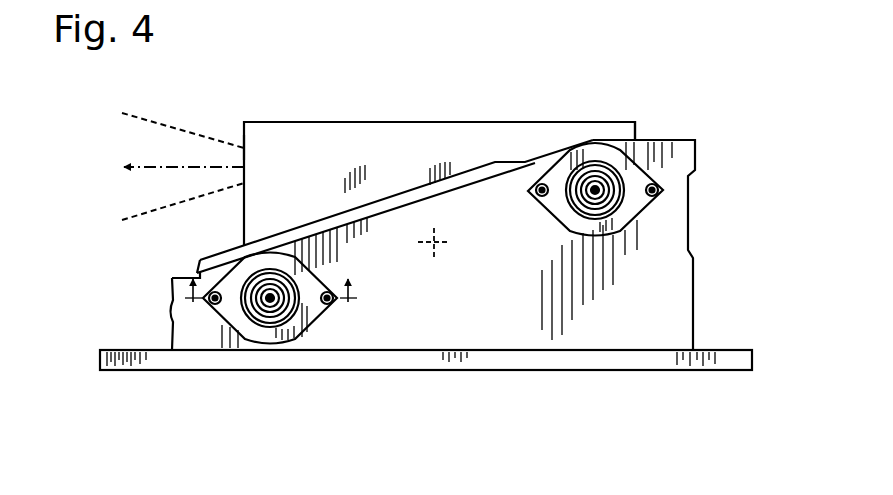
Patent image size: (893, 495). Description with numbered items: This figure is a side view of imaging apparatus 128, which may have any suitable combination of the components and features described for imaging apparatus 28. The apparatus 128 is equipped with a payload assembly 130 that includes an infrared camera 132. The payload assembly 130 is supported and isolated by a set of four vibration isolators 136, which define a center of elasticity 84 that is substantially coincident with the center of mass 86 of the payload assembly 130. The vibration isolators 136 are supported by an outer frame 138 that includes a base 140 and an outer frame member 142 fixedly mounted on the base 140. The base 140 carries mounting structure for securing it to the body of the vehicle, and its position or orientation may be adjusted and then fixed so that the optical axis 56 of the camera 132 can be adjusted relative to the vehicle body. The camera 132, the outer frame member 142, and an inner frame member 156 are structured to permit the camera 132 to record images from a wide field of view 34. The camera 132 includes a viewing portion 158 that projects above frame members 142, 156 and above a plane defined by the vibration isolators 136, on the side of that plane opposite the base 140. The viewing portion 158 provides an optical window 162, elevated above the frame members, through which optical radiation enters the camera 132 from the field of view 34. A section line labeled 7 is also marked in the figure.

The imaging apparatus 28 is at (206, 46).
The imaging apparatus 128 is at (233, 75).
The field of view 34 is at (150, 120).
The optical axis 56 is at (185, 179).
The optical window 162 is at (241, 146).
The viewing portion 158 is at (288, 147).
The inner frame member 156 is at (232, 250).
The vibration isolators 136 is at (316, 325).
The section line 7- 7 is at (271, 275).
The center of elasticity 84 is at (433, 246).
The center of mass 86 is at (435, 246).
The outer frame 138 is at (121, 323).
The outer frame member 142 is at (171, 340).
The payload assembly 130 is at (645, 105).
The infrared camera 132 is at (641, 130).
The base 140 is at (706, 350).